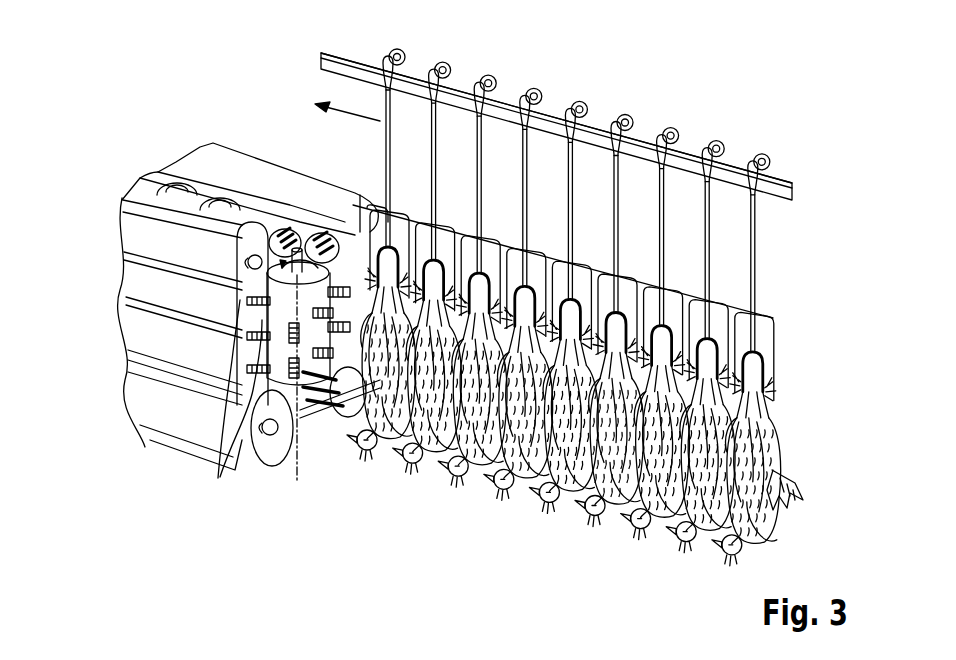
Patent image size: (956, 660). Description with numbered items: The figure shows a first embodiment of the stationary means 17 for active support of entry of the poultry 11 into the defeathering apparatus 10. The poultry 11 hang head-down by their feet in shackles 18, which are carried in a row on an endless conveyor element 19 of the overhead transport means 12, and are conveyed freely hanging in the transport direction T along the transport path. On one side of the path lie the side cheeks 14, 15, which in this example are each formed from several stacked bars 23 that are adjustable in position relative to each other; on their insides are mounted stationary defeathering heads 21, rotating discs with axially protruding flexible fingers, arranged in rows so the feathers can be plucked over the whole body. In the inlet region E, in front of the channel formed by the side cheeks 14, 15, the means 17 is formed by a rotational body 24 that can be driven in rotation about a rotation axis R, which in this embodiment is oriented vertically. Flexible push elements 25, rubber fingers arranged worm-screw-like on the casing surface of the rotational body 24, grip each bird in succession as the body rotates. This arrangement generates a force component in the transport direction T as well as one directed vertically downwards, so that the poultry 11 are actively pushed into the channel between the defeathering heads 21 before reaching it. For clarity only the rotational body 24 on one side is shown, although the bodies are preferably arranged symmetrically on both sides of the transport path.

The apparatus 10 is at (437, 655).
The poultry 11 is at (762, 450).
The transport means 12 is at (705, 118).
The side cheek 14 is at (130, 187).
The side cheek 15 is at (247, 150).
The stationary means for active support of entry 17 is at (262, 313).
The shackle 18 is at (436, 126).
The conveyor element 19 is at (408, 85).
The defeathering head 21 is at (318, 232).
The bar 23 is at (157, 380).
The rotational body 24 is at (307, 412).
The push element 25 is at (218, 478).
The transport direction T is at (360, 116).
The rotation axis R is at (293, 487).
The inlet region E is at (336, 454).